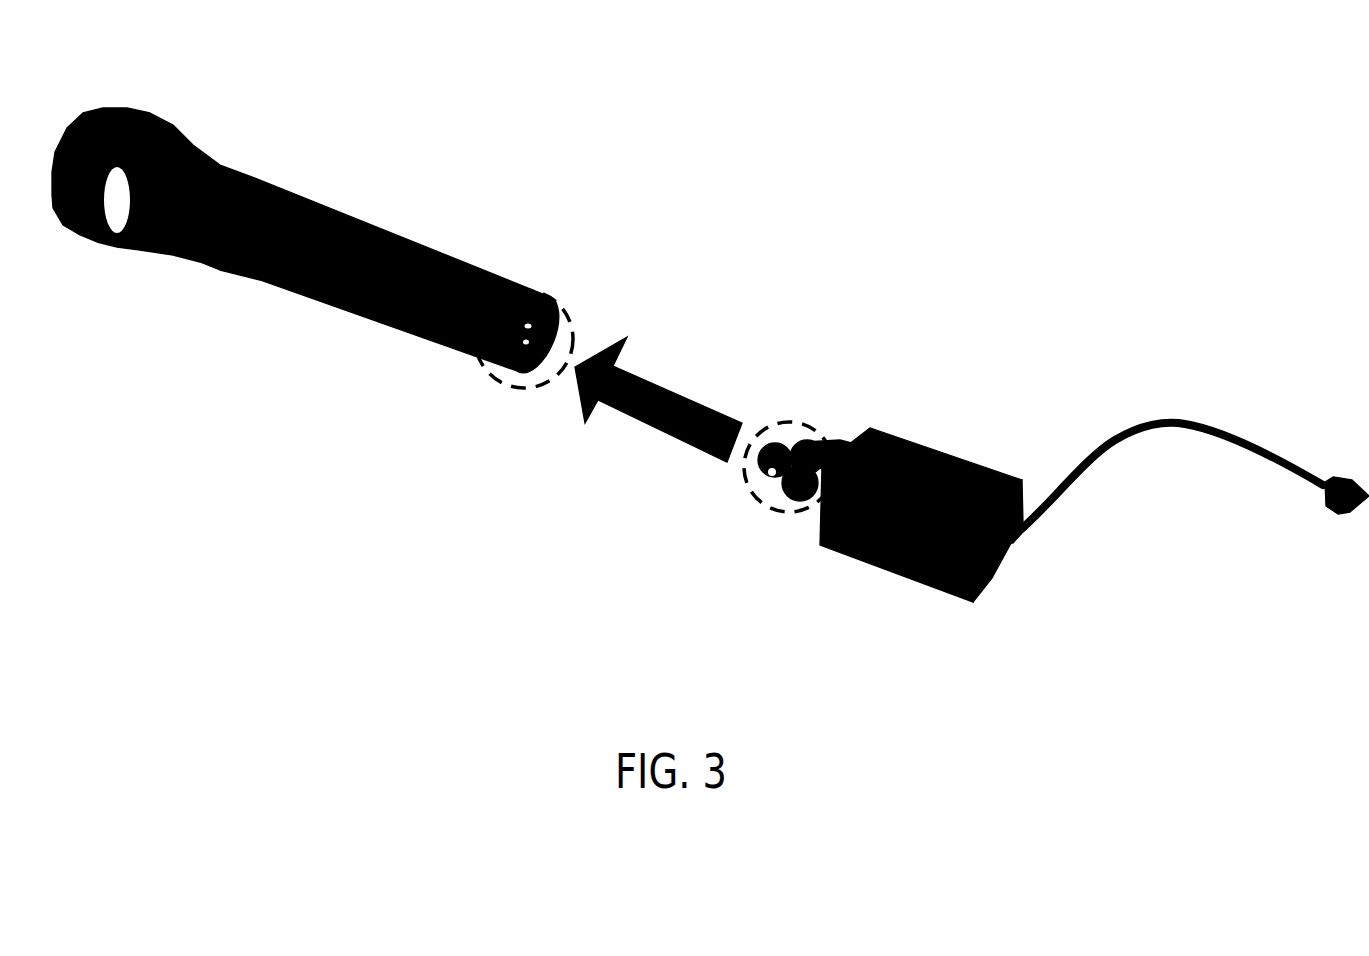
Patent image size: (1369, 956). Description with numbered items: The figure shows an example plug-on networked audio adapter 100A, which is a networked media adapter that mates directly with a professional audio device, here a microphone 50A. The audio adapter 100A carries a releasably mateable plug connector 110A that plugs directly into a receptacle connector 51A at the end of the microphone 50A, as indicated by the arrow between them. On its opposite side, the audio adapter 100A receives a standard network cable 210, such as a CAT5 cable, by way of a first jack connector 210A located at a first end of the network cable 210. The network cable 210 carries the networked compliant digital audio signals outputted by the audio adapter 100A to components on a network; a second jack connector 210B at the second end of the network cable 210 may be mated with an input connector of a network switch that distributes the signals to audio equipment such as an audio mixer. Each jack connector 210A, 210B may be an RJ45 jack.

The microphone 50A is at (377, 236).
The receptacle connector 51A is at (567, 312).
The plug connector 110A is at (787, 424).
The plug-on networked audio adapter 100A is at (936, 452).
The network cable 210 is at (1217, 425).
The first jack connector 210A is at (1018, 543).
The second jack connector 210B is at (1336, 512).